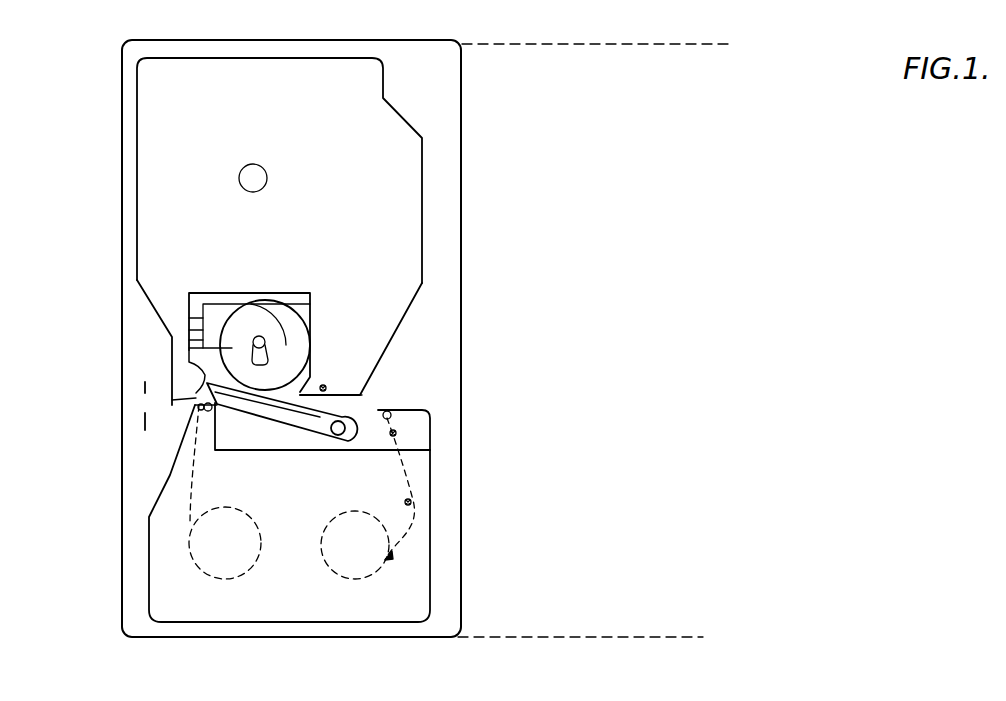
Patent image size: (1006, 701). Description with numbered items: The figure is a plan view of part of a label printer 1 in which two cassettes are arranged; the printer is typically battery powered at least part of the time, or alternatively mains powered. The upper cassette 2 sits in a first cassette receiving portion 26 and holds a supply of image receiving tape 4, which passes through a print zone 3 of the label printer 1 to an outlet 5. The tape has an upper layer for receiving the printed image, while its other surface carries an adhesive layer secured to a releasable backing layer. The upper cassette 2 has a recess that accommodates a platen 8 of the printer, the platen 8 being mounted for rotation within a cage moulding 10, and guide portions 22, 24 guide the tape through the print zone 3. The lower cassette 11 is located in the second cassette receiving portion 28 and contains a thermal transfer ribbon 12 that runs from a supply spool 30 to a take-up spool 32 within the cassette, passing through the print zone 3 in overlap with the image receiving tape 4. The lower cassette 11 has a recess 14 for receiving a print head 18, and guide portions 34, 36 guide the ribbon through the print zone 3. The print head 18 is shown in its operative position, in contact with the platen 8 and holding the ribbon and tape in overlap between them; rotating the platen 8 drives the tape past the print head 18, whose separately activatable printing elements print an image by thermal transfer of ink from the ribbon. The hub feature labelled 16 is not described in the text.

The label printer 1 is at (692, 42).
The upper cassette 2 is at (408, 186).
The print zone 3 is at (192, 390).
The image receiving tape 4 is at (140, 409).
The outlet 5 is at (141, 417).
The platen 8 is at (293, 295).
The cage moulding 10 is at (268, 338).
The lower cassette 11 is at (413, 527).
The thermal transfer ribbon 12 is at (357, 407).
The recess 14 is at (430, 447).
The hub 16 is at (314, 338).
The print head 18 is at (277, 415).
The guide portion 22 is at (297, 388).
The guide portion 24 is at (196, 398).
The first cassette receiving portion 26 is at (462, 108).
The second cassette receiving portion 28 is at (447, 482).
The supply spool 30 is at (380, 562).
The take-up spool 32 is at (189, 545).
The guide portion 34 is at (389, 411).
The guide portion 36 is at (198, 405).